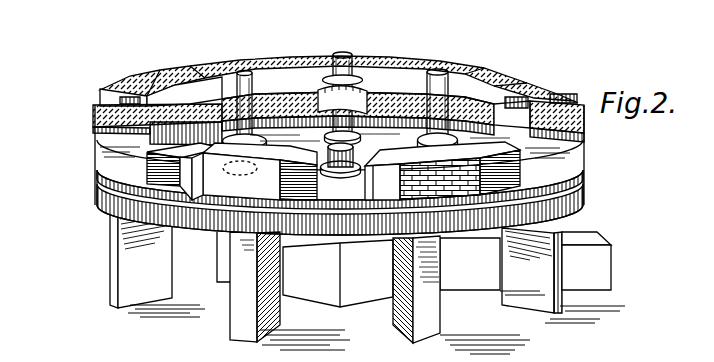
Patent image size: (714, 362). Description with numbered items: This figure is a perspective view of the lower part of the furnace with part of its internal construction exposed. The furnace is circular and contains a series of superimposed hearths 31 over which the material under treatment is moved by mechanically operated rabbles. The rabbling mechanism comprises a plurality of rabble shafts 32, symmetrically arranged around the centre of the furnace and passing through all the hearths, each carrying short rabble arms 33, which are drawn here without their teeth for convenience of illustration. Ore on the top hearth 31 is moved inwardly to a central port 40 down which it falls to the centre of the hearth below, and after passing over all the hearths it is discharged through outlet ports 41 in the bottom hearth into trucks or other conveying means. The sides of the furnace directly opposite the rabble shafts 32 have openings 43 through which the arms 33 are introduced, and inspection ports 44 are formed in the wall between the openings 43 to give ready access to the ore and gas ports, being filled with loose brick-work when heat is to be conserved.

The hearth 31 is at (301, 137).
The rabble shaft 32 is at (478, 53).
The rabble arm 33 is at (404, 152).
The central port 40 is at (370, 88).
The outlet port 41 is at (581, 173).
The opening 43 is at (347, 57).
The inspection port 44 is at (500, 73).